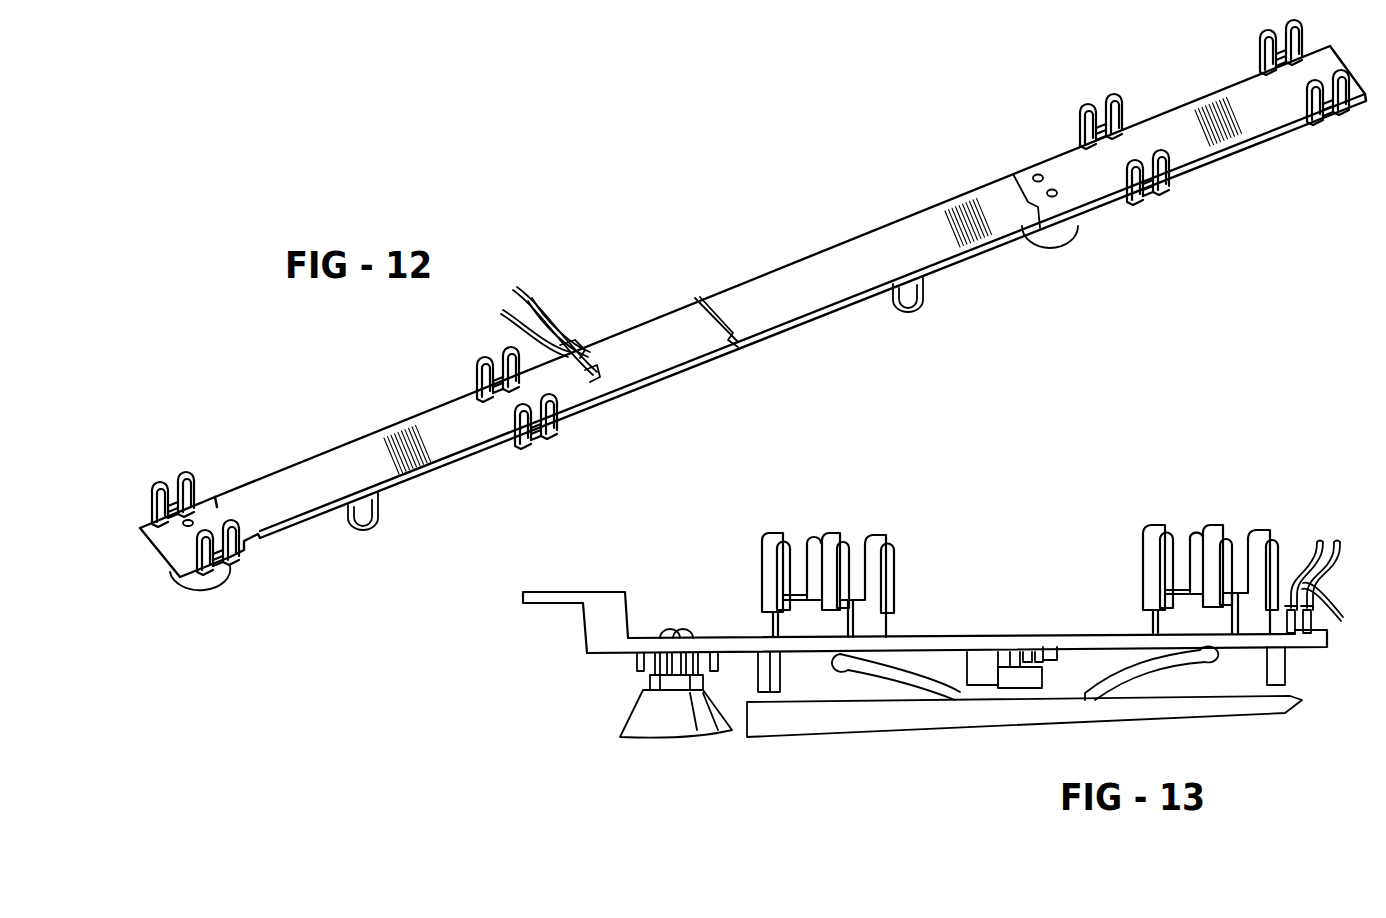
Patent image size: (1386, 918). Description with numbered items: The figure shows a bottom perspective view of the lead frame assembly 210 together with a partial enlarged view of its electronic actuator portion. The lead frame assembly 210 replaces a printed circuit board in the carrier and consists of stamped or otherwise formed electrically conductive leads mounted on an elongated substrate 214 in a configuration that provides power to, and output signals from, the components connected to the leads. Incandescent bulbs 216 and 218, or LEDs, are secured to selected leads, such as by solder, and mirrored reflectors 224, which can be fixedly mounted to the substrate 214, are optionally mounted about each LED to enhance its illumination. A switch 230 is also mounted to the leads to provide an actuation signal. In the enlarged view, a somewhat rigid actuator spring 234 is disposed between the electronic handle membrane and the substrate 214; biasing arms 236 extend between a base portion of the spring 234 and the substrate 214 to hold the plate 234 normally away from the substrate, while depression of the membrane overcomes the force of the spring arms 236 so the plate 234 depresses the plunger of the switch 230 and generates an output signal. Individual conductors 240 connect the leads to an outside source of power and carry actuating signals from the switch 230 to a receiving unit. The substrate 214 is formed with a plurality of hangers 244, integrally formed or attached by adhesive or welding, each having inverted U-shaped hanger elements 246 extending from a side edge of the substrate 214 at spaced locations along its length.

In FIG. 12, the lead frame assembly 210 is at (788, 193).
In FIG. 12, the substrate 214 is at (668, 335).
In FIG. 13, the substrate 214 is at (1030, 636).
In FIG. 12, the incandescent bulb 216 is at (918, 300).
In FIG. 12, the incandescent bulb 218 is at (375, 527).
In FIG. 12, the mirrored reflector 224 is at (1078, 233).
In FIG. 13, the mirrored reflector 224 is at (640, 735).
In FIG. 13, the switch 230 is at (1038, 695).
In FIG. 13, the actuator spring 234 is at (958, 720).
In FIG. 13, the biasing arms 236 is at (910, 697).
In FIG. 12, the individual conductors 240 is at (560, 350).
In FIG. 13, the individual conductors 240 is at (1334, 587).
In FIG. 12, the hanger 244 is at (1080, 120).
In FIG. 13, the hanger 244 is at (893, 527).
In FIG. 13, the inverted U-shaped hanger elements 246 is at (830, 533).